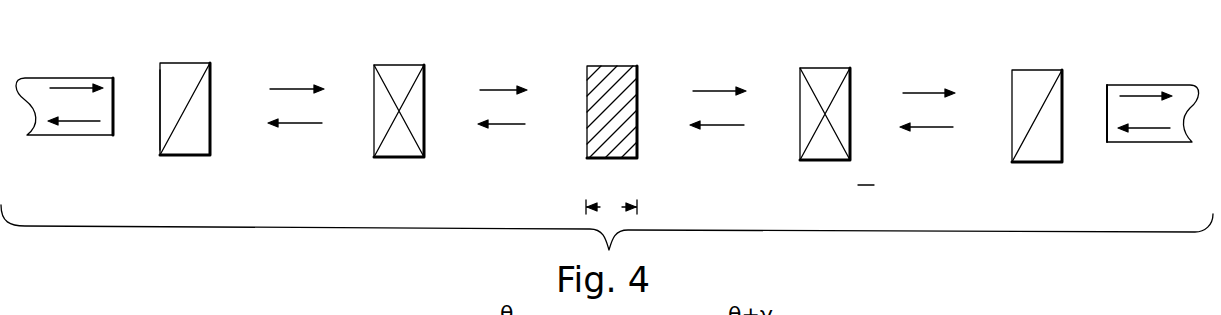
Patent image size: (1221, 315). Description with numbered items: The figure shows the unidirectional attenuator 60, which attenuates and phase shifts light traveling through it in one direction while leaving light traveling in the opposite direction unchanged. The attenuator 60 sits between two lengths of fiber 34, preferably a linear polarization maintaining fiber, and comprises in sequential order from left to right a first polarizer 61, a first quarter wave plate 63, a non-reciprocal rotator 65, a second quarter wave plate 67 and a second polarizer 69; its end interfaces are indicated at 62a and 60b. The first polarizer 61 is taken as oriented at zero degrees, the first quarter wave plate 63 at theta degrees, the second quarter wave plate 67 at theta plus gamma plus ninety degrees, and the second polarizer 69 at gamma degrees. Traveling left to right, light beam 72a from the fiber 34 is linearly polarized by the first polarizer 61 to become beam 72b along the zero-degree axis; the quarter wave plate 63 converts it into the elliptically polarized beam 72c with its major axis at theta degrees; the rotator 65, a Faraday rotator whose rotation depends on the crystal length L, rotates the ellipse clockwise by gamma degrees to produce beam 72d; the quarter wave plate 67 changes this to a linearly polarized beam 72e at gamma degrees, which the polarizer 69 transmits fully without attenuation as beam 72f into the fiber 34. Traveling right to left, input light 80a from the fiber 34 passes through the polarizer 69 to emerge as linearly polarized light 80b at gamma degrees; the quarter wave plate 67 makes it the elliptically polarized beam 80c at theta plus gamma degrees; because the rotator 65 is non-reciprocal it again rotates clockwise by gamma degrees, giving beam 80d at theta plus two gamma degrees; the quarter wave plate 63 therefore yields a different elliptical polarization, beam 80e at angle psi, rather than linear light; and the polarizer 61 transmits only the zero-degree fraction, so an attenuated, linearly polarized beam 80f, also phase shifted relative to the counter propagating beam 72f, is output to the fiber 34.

The fiber 34 is at (42, 135).
The unidirectional attenuator 60 is at (566, 40).
The interface of the attenuator 60b is at (1062, 88).
The first polarizer 61 is at (190, 63).
The input surface of polarizer 62a is at (160, 85).
The first quarter wave plate 63 is at (393, 65).
The non-reciprocal rotator 65 is at (606, 66).
The second quarter wave plate 67 is at (818, 68).
The second polarizer 69 is at (1020, 70).
The light beam 72a is at (74, 88).
The linear polarized beam 72b is at (287, 89).
The elliptical polarized beam 72c is at (487, 90).
The light beam 72d is at (708, 91).
The beam 72e is at (925, 93).
The counter propagating beam 72f is at (1135, 96).
The input light 80a is at (1145, 128).
The linearly polarized light 80b is at (935, 127).
The beam 80c is at (727, 125).
The beam 80d is at (507, 124).
The beam 80e is at (297, 123).
The attenuated, linearly polarized beam 80f is at (74, 123).